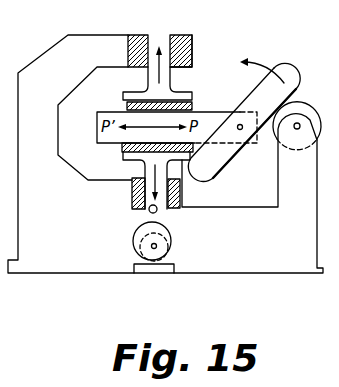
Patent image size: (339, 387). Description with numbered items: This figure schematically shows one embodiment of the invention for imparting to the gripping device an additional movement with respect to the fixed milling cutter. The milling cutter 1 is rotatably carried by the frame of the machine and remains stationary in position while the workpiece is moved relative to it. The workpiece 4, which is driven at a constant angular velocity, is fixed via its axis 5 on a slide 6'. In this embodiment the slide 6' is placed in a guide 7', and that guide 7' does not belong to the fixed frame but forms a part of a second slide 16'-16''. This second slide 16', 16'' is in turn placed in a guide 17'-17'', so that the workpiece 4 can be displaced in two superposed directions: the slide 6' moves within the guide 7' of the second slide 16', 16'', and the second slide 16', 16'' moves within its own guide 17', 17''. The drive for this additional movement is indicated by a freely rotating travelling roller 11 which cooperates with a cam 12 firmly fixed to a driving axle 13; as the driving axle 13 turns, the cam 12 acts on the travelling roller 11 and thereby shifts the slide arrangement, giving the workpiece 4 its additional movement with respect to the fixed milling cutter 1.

The milling cutter 1 is at (314, 117).
The workpiece 4 is at (292, 83).
The axis 5 is at (241, 124).
The slide 6' is at (168, 104).
The guide 7' is at (173, 98).
The travelling roller 11 is at (148, 211).
The cam 12 is at (137, 242).
The driving axle 13 is at (157, 245).
The second slide 16' is at (178, 40).
The second slide 16'' is at (140, 179).
The guide 17' is at (139, 40).
The guide 17'' is at (138, 185).